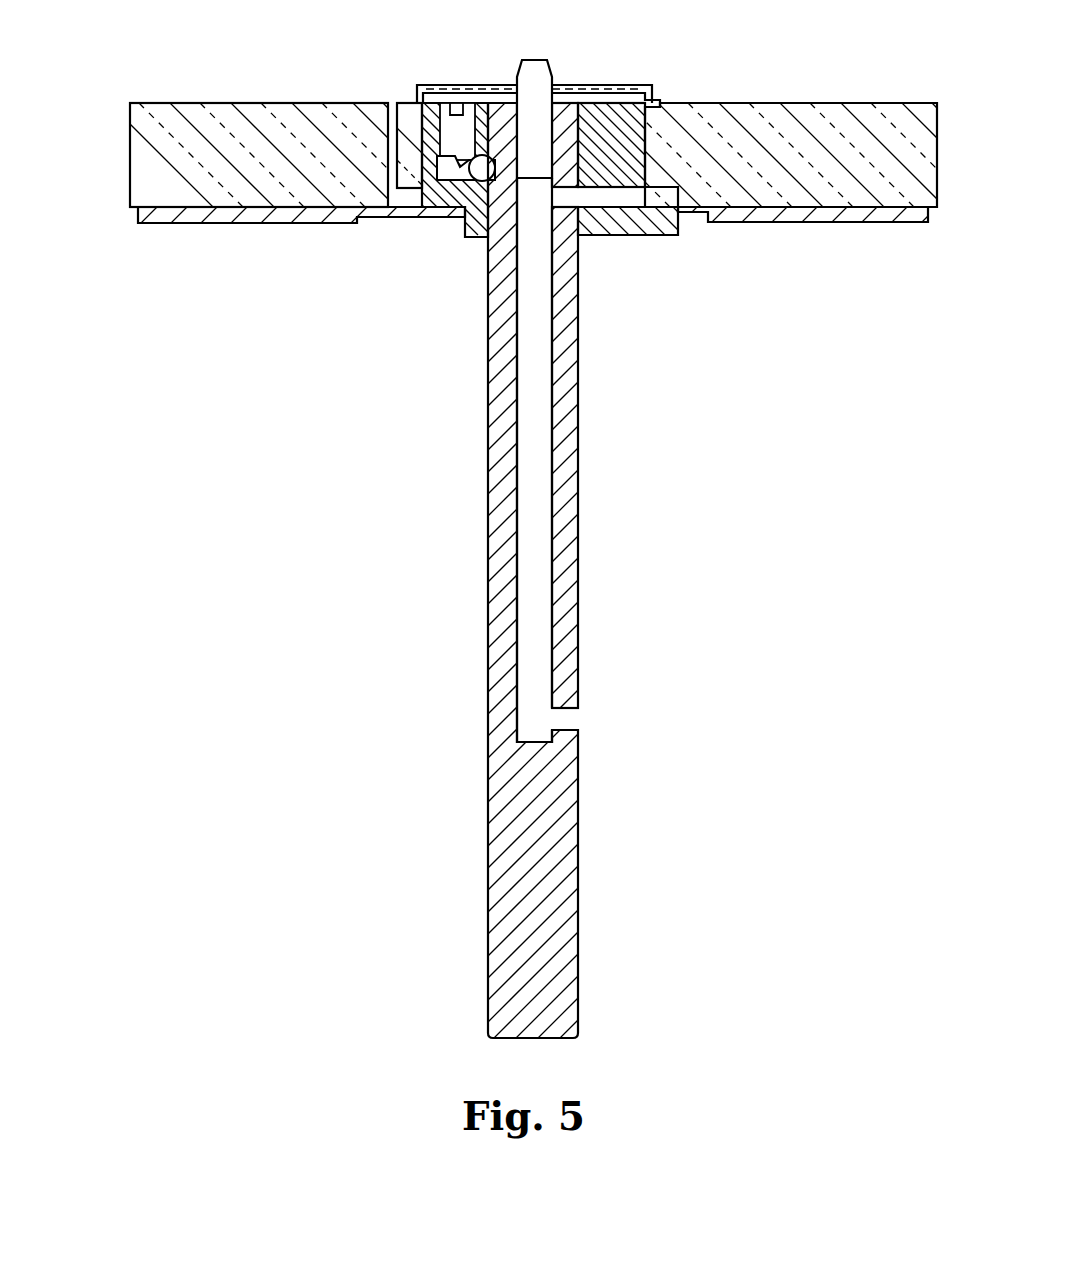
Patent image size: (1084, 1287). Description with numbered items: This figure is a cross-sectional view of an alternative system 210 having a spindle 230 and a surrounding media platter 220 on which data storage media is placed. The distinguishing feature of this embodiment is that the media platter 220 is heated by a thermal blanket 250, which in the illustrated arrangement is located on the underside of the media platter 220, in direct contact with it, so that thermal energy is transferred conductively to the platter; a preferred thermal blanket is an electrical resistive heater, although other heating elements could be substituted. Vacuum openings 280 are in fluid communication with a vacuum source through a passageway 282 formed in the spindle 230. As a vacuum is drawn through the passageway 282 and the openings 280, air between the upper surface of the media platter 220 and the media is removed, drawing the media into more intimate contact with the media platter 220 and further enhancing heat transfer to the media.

The system 210 is at (340, 548).
The media platter 220 is at (121, 197).
The spindle 230 is at (604, 655).
The thermal blanket 250 is at (267, 224).
The vacuum openings 280 is at (392, 90).
The passageway 282 is at (540, 508).